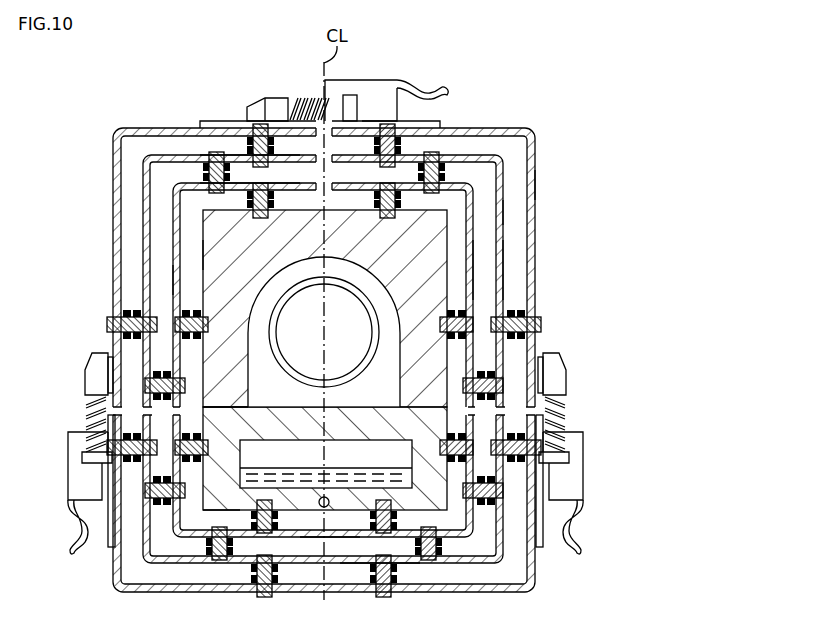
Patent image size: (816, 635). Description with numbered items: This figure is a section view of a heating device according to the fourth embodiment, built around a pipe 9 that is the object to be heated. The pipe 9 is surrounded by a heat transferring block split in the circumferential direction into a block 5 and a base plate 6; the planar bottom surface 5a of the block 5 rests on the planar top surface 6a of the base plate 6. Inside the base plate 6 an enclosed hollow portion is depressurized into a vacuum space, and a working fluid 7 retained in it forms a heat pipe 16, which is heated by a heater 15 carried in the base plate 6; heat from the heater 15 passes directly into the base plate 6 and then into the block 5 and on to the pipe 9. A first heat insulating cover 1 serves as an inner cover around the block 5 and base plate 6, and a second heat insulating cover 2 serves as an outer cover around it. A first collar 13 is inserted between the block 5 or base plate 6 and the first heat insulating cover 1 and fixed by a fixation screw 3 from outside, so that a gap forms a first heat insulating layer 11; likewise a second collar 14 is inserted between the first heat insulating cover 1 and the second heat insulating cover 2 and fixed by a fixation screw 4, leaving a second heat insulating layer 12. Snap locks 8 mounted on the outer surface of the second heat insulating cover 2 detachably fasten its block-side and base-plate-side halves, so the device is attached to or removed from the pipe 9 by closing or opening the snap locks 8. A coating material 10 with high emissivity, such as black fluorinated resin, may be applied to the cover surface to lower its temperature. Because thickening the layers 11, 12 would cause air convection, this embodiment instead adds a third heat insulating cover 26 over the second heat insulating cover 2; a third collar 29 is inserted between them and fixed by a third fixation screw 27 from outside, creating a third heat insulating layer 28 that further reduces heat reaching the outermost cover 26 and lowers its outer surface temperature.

The first heat insulating cover 1 is at (177, 200).
The second heat insulating cover 2 is at (145, 173).
The fixation screw 3 is at (264, 207).
The fixation screw 4 is at (427, 153).
The block 5 is at (218, 229).
The bottom surface 5a is at (228, 400).
The base plate 6 is at (222, 497).
The top surface 6a is at (235, 412).
The working fluid 7 is at (295, 480).
The snap lock 8 is at (372, 90).
The pipe 9 is at (273, 330).
The coating material 10 is at (487, 152).
The first heat insulating layer 11 is at (190, 254).
The second heat insulating layer 12 is at (165, 282).
The first collar 13 is at (250, 203).
The second collar 14 is at (205, 175).
The heater 15 is at (323, 508).
The heat pipe 16 is at (253, 453).
The third heat insulating cover 26 is at (534, 184).
The third fixation screw 27 is at (538, 324).
The third heat insulating layer 28 is at (510, 211).
The third collar 29 is at (514, 310).